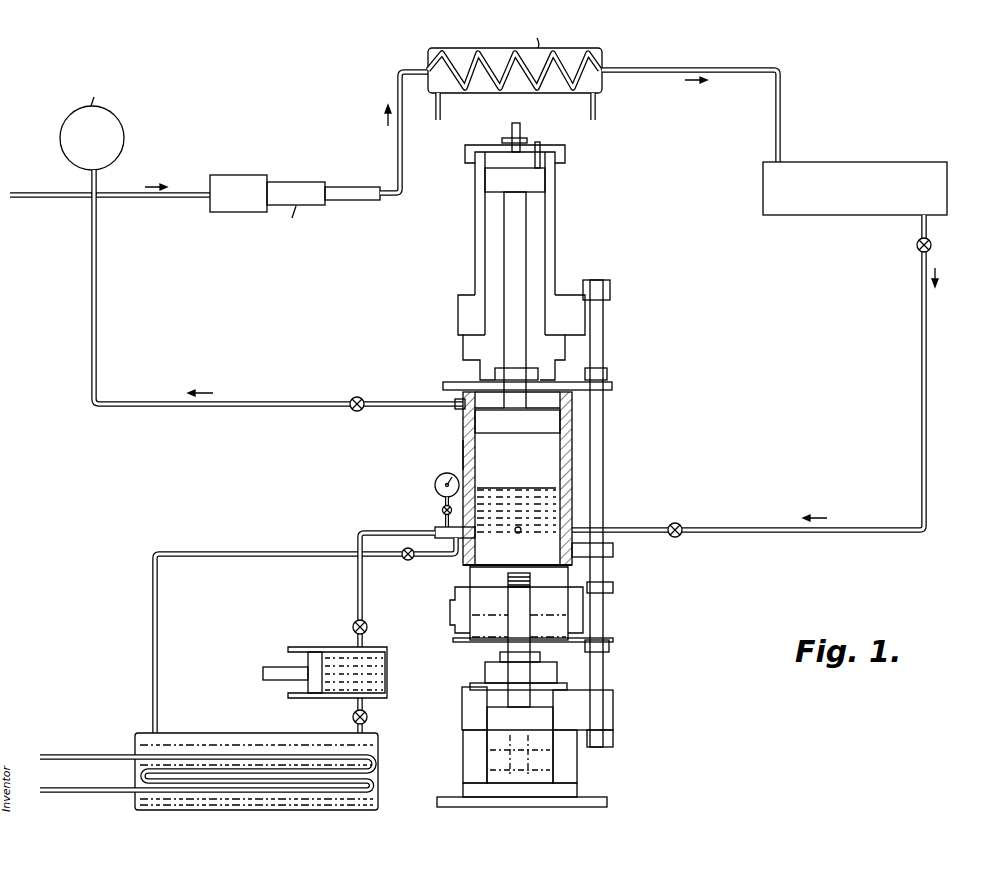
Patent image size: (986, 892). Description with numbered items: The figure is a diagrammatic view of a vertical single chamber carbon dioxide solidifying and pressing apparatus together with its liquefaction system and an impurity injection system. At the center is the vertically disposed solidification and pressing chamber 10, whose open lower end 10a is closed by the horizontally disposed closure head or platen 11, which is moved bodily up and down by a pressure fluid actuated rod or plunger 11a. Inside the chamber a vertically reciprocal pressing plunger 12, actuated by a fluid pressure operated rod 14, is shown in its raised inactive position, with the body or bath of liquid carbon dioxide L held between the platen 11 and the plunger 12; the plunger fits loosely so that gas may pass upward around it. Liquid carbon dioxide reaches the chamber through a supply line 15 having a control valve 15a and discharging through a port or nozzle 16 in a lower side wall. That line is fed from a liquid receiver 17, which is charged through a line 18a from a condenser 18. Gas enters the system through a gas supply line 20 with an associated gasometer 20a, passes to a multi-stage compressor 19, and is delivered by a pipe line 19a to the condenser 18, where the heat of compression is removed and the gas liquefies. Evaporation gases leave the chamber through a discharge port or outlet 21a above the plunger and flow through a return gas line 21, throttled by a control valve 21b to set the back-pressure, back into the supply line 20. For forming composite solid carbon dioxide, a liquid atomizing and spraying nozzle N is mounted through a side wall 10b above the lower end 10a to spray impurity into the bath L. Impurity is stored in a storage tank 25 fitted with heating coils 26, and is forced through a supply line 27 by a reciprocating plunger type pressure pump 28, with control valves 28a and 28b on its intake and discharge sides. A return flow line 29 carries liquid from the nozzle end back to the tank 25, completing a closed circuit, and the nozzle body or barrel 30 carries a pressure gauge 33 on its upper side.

The solidification and pressing chamber 10 is at (573, 464).
The open lower end 10a is at (545, 563).
The side wall 10b is at (462, 456).
The closure head or platen 11 is at (547, 612).
The pressure fluid actuated rod or plunger 11a is at (520, 648).
The pressing plunger 12 is at (547, 427).
The fluid pressure operated rod 14 is at (513, 348).
The supply line 15 is at (741, 530).
The control valve 15a is at (675, 523).
The discharge port or nozzle 16 is at (552, 520).
The liquid receiver 17 is at (865, 174).
The condenser 18 is at (580, 47).
The line 18a is at (782, 113).
The multi-stage compressor 19 is at (238, 188).
The pipe line 19a is at (399, 103).
The gas supply line 20 is at (20, 194).
The gasometer 20a is at (107, 158).
The return gas line 21 is at (258, 402).
The discharge port or outlet 21a is at (463, 406).
The control valve 21b is at (360, 396).
The storage tank 25 is at (395, 758).
The heating coils 26 is at (205, 775).
The supply line 27 is at (362, 596).
The pressure pump 28 is at (396, 664).
The control valve 28a is at (352, 717).
The control valve 28b is at (352, 626).
The return flow line 29 is at (208, 553).
The nozzle body or barrel 30 is at (407, 560).
The pressure gauge 33 is at (436, 486).
The body or bath of liquid carbon dioxide L is at (522, 530).
The liquid atomizing and spraying nozzle N is at (443, 533).